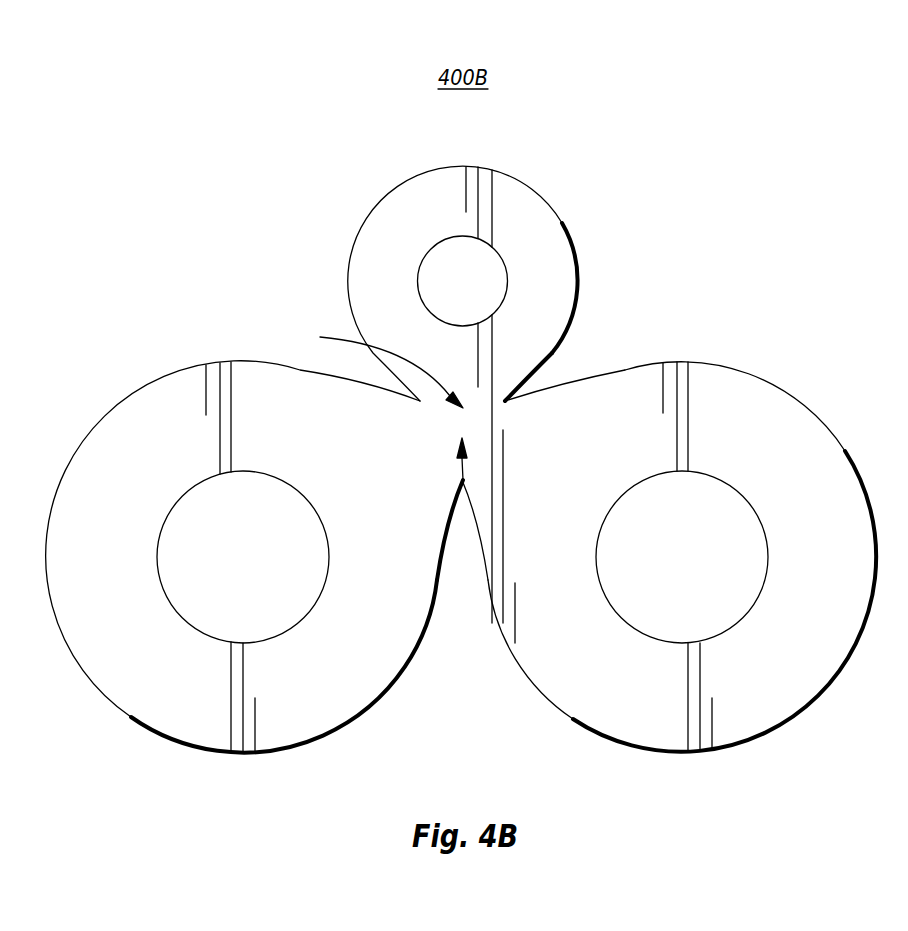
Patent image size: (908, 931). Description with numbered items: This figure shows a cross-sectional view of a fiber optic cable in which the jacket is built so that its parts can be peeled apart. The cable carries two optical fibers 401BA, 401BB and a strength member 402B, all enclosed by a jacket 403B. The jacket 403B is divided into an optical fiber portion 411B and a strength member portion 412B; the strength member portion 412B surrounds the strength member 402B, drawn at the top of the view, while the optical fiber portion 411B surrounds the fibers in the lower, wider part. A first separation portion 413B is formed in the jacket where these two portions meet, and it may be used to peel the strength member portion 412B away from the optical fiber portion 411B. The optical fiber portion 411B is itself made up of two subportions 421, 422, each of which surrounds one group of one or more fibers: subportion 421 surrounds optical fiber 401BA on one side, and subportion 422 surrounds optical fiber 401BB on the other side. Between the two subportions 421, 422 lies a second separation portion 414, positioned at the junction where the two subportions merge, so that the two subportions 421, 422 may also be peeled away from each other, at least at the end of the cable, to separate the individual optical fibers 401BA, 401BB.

The strength member portion 412B is at (380, 263).
The strength member 402B is at (463, 280).
The jacket 403B is at (533, 337).
The first separation portion 413B is at (365, 367).
The second separation portion 414 is at (463, 480).
The optical fiber portion 411B is at (558, 660).
The subportion 421 is at (170, 410).
The subportion 422 is at (762, 405).
The optical fiber 401BA is at (230, 556).
The optical fiber 401BB is at (700, 573).